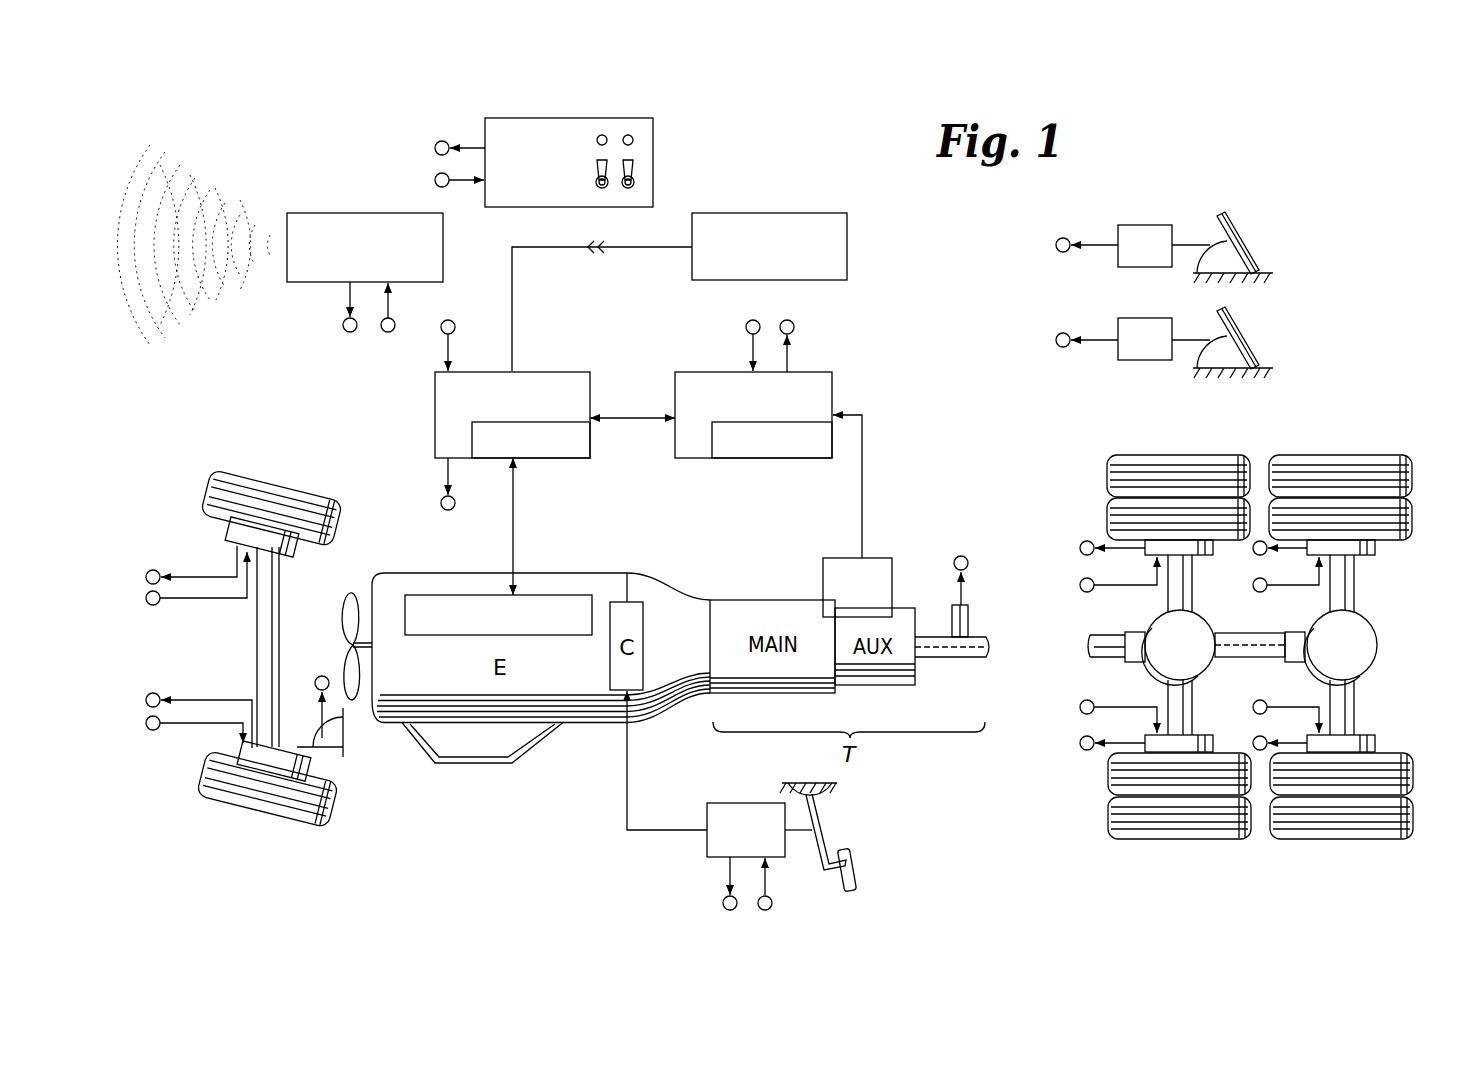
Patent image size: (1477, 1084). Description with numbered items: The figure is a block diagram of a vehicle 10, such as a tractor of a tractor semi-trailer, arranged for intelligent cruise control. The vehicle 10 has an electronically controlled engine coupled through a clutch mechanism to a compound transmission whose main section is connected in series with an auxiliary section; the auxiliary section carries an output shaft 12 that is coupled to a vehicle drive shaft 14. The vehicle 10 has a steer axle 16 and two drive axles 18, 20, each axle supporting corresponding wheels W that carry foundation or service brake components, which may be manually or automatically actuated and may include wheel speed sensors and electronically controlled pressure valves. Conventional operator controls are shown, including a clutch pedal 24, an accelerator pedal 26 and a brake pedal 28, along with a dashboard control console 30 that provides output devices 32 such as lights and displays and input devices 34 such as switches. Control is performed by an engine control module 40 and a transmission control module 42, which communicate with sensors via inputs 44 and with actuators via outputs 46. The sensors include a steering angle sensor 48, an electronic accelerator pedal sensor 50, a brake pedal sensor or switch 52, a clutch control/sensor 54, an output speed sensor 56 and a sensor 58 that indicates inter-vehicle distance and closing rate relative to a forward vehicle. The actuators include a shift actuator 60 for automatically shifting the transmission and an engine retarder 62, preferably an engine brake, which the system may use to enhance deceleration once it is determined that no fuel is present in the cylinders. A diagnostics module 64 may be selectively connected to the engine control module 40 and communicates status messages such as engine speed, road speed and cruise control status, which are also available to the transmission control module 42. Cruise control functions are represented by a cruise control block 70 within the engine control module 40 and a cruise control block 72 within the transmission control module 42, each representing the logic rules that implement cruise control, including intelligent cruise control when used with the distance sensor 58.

The vehicle 10 is at (500, 843).
The output shaft 12 is at (972, 657).
The vehicle drive shaft 14 is at (1098, 657).
The steer axle 16 is at (274, 648).
The drive axle 18 is at (1253, 647).
The drive axle 20 is at (1358, 690).
The clutch pedal 24 is at (823, 820).
The accelerator pedal 26 is at (1235, 228).
The brake pedal 28 is at (1235, 323).
The dashboard control console 30 is at (573, 190).
The output devices 32 is at (633, 140).
The input devices 34 is at (640, 180).
The engine control module (ECM) 40 is at (524, 483).
The transmission control module (TCM) 42 is at (783, 433).
The inputs 44 is at (397, 330).
The outputs 46 is at (341, 329).
The steering angle sensor 48 is at (350, 740).
The electronic accelerator pedal sensor (APS) 50 is at (1131, 225).
The brake pedal sensor or switch 52 is at (1131, 318).
The clutch control/sensor 54 is at (727, 803).
The output speed sensor 56 is at (968, 610).
The distance sensor 58 is at (366, 213).
The shift actuator 60 is at (880, 558).
The engine retarder 62 is at (552, 595).
The diagnostics module 64 is at (847, 228).
The cruise control block 70 is at (560, 458).
The cruise control block 72 is at (745, 458).
The wheels W is at (205, 477).